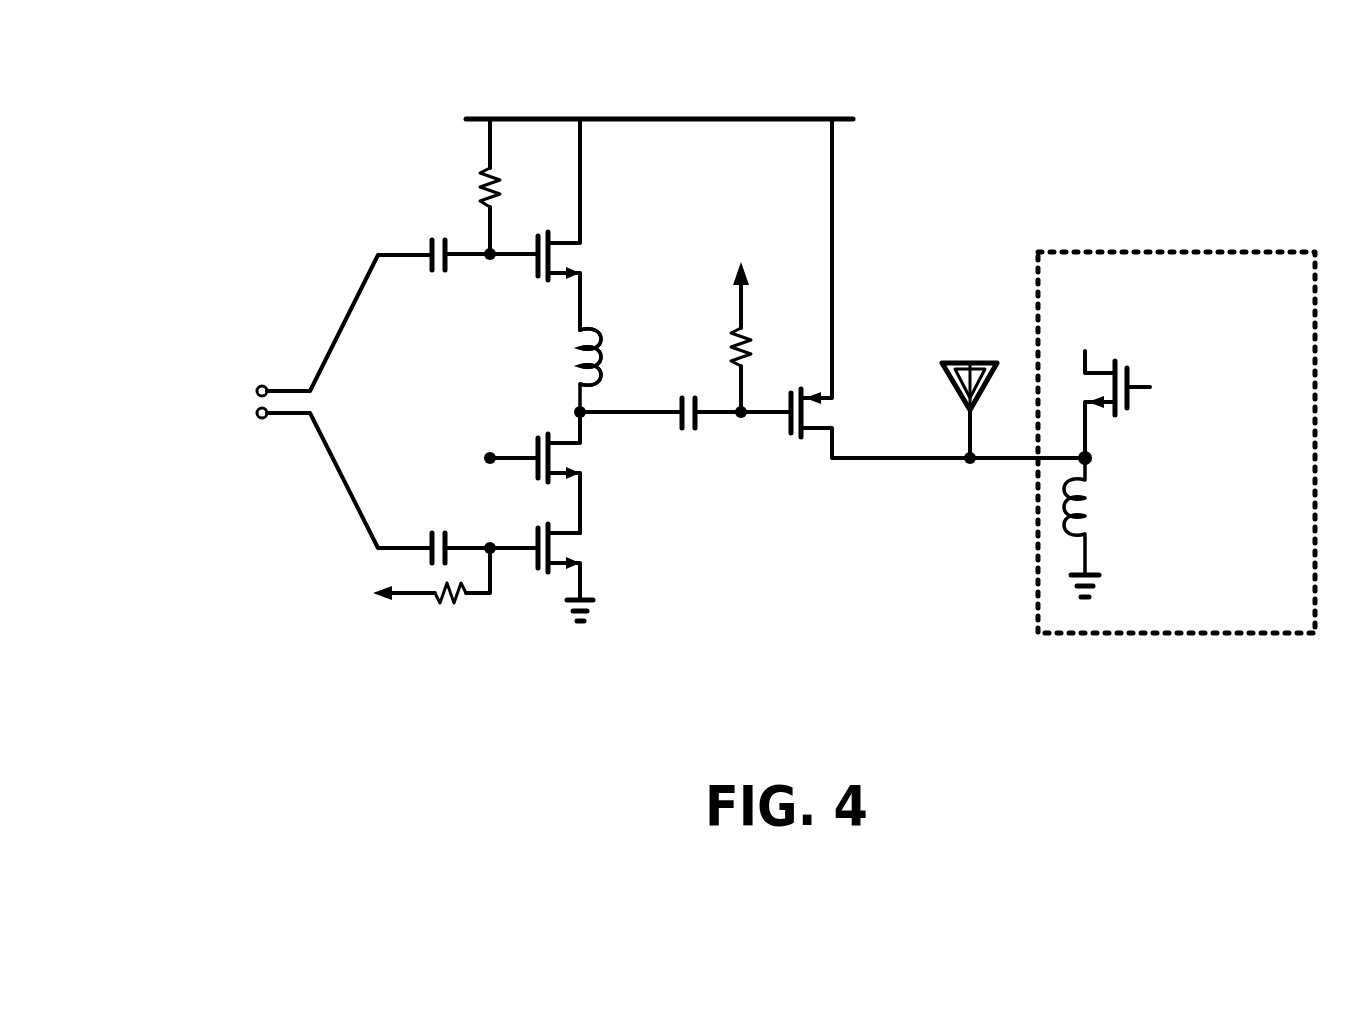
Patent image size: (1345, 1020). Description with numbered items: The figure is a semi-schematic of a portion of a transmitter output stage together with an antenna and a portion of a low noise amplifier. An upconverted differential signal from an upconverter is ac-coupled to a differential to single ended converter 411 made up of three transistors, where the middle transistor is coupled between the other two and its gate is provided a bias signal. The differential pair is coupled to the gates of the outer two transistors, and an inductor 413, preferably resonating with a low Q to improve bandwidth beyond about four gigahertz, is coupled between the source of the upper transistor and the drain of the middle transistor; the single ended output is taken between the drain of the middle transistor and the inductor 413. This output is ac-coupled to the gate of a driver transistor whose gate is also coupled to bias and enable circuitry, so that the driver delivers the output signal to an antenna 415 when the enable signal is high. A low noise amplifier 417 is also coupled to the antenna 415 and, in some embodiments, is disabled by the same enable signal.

The differential to single ended converter 411 is at (628, 608).
The inductor 413 is at (563, 348).
The antenna 415 is at (952, 382).
The low noise amplifier 417 is at (1163, 633).